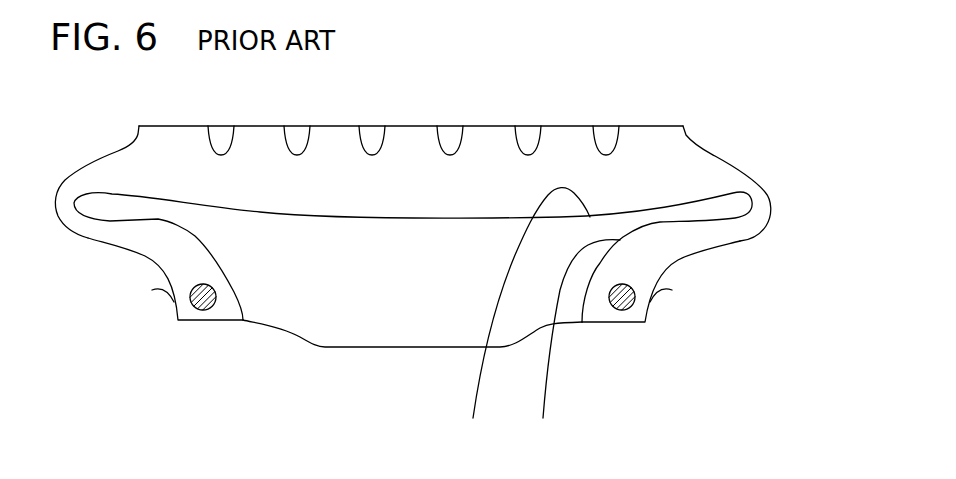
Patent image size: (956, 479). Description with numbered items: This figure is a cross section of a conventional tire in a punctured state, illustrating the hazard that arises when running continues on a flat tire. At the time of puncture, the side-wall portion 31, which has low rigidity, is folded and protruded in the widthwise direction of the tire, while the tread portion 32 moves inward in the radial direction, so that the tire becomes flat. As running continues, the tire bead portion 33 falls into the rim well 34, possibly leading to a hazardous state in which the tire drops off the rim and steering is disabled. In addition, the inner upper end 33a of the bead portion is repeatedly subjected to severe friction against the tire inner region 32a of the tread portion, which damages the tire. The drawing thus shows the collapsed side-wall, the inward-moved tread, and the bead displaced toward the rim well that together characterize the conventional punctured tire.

The side-wall portion 31 is at (793, 216).
The tread portion 32 is at (575, 108).
The tire inner region of the tread portion 32a is at (521, 321).
The tire bead portion 33 is at (652, 267).
The inner upper end of the bead portion 33a is at (571, 347).
The rim well 34 is at (398, 328).